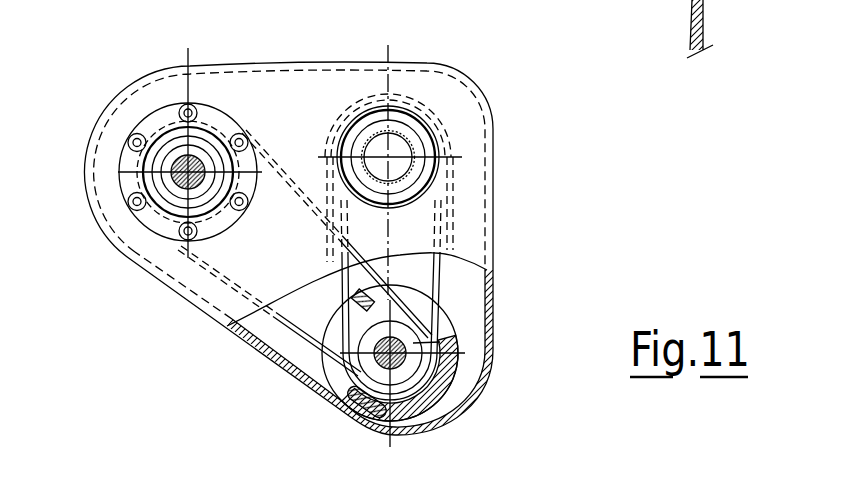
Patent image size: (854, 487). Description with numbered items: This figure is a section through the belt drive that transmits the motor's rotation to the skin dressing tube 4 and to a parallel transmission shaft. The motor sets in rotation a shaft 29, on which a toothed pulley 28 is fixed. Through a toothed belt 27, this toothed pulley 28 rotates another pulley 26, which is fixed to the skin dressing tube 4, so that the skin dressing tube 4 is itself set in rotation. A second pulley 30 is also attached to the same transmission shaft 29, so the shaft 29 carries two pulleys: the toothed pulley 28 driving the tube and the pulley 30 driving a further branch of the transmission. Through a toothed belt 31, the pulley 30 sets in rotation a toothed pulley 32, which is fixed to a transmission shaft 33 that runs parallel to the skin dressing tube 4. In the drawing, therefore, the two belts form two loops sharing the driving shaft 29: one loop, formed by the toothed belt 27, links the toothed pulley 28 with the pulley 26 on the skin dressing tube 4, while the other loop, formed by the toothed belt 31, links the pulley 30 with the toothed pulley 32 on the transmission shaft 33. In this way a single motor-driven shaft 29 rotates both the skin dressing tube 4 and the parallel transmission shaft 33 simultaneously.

The skin dressing tube 4 is at (398, 167).
The pulley 26 is at (427, 132).
The toothed belt 27 is at (437, 248).
The toothed pulley 28 is at (346, 384).
The shaft 29 is at (476, 385).
The pulley 30 is at (440, 335).
The toothed belt 31 is at (238, 284).
The toothed pulley 32 is at (213, 110).
The transmission-shaft 33 is at (166, 153).